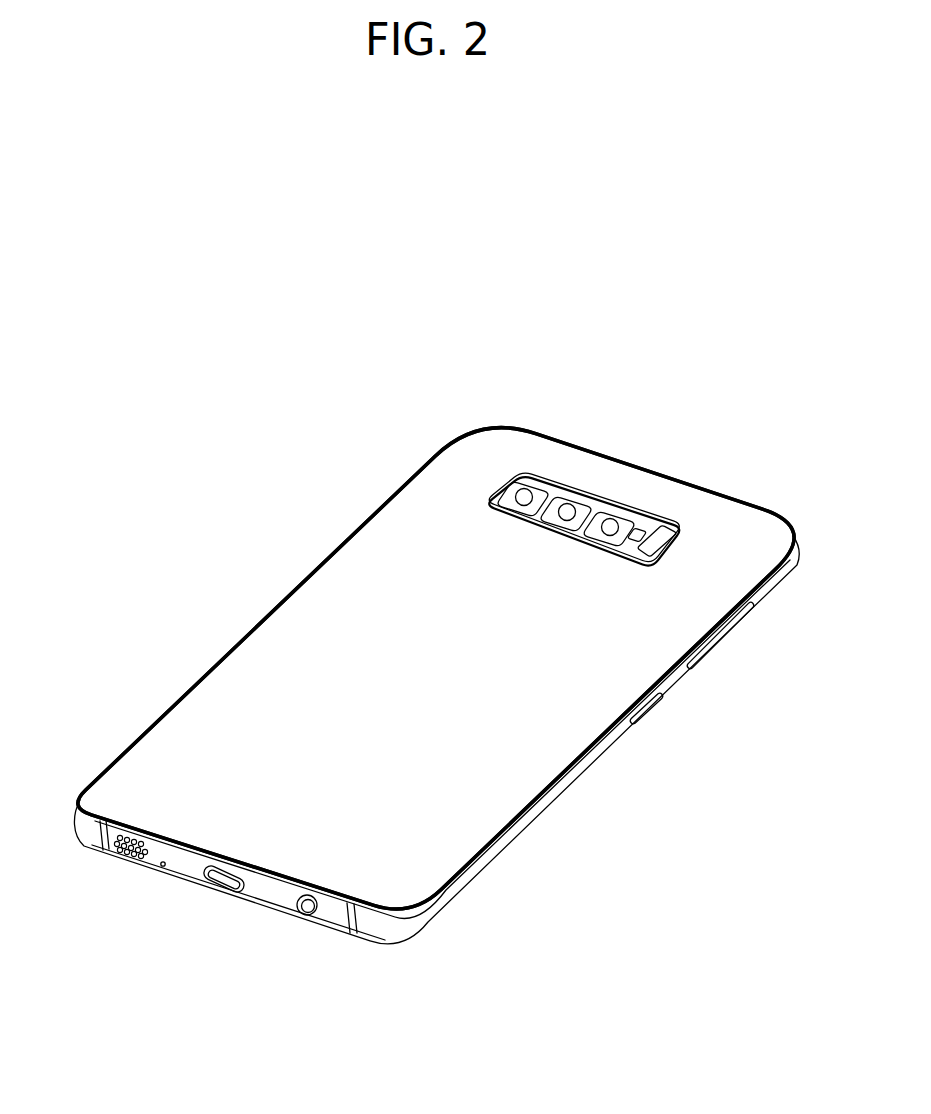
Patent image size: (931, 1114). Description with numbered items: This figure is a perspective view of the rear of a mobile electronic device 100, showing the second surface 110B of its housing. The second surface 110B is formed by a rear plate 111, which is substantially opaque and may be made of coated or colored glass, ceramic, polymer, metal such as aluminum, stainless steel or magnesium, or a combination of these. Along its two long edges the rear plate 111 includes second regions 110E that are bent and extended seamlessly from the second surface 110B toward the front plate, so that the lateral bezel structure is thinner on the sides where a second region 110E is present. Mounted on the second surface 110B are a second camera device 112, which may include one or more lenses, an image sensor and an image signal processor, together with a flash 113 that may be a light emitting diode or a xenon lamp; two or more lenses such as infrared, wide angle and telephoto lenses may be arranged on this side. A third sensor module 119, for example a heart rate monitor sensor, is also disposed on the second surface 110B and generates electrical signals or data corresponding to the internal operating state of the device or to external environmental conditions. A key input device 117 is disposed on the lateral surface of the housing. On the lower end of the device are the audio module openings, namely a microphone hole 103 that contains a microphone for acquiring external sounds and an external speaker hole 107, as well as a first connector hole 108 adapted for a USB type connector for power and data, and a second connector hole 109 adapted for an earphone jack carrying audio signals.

The mobile electronic device 100 is at (203, 508).
The microphone hole 103 is at (158, 870).
The external speaker hole 107 is at (118, 858).
The first connector hole 108 is at (213, 893).
The second connector hole 109 is at (297, 920).
The second surface 110B is at (398, 603).
The second regions 110E is at (250, 635).
The rear plate 111 is at (250, 748).
The second camera device 112 is at (610, 518).
The flash 113 is at (640, 532).
The key input device 117 is at (726, 639).
The third sensor module 119 is at (665, 530).